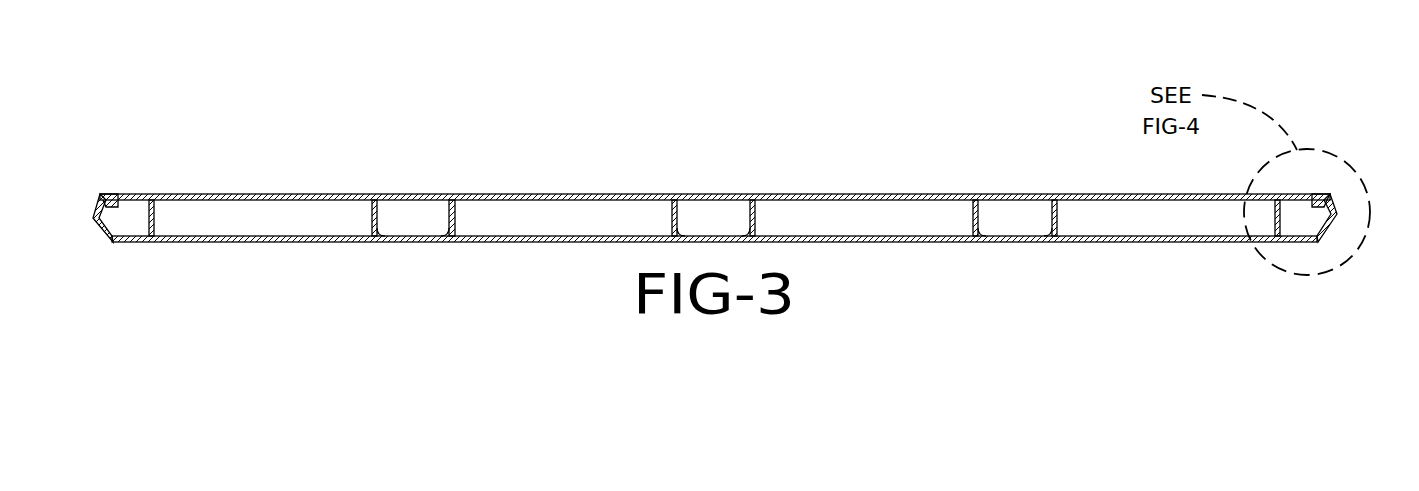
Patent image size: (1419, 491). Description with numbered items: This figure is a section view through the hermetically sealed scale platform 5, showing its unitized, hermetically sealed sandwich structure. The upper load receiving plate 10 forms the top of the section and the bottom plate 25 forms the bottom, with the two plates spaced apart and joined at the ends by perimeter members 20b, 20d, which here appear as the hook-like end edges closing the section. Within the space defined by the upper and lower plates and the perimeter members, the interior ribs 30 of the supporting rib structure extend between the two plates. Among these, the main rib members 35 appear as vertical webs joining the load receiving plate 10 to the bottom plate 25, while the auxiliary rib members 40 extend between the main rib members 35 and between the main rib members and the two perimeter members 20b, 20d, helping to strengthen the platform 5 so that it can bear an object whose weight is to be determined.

The hermetically sealed scale platform 5 is at (140, 120).
The upper load receiving plate 10 is at (1092, 195).
The perimeter member 20b is at (100, 222).
The perimeter member 20d is at (1330, 225).
The bottom plate 25 is at (912, 243).
The interior ribs 30 is at (757, 216).
The main rib members 35 is at (372, 218).
The auxiliary rib members 40 is at (217, 236).